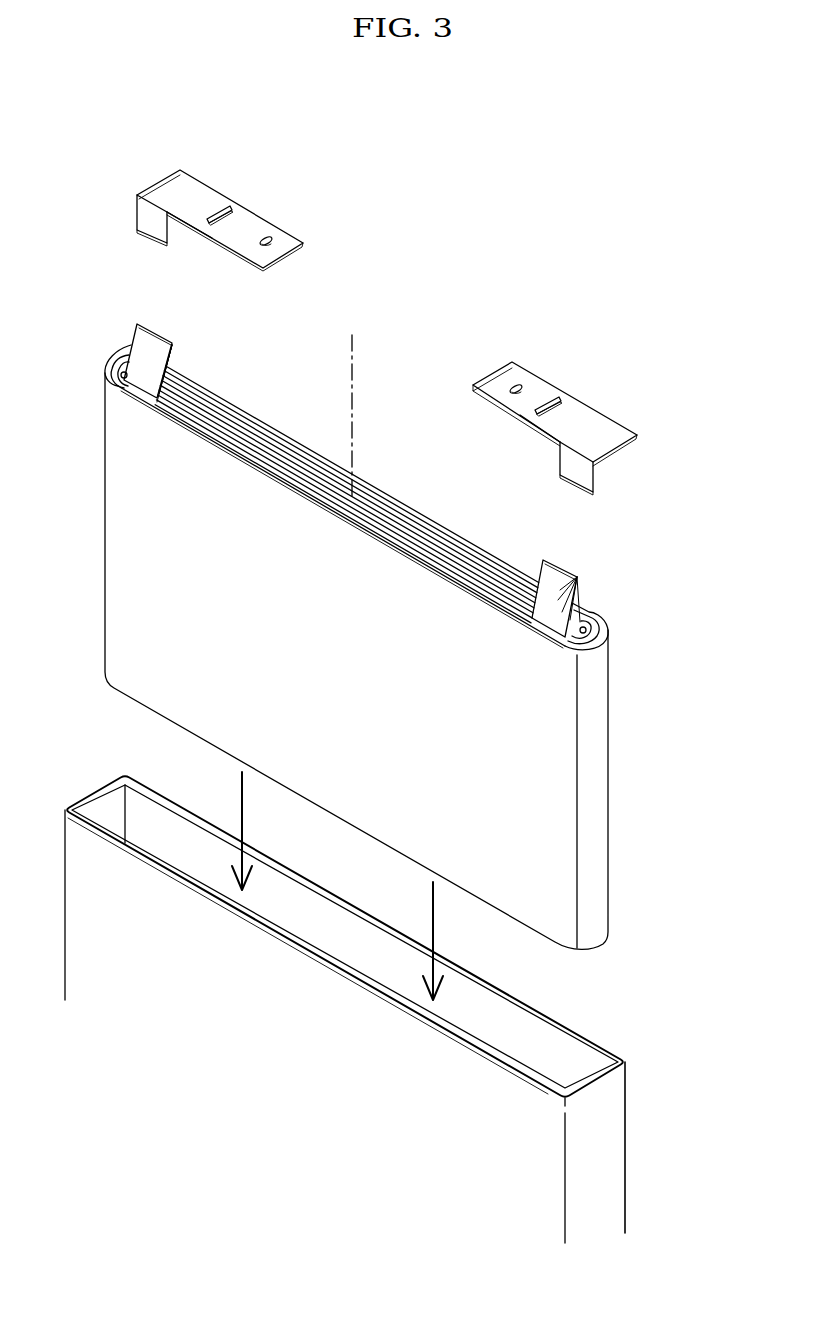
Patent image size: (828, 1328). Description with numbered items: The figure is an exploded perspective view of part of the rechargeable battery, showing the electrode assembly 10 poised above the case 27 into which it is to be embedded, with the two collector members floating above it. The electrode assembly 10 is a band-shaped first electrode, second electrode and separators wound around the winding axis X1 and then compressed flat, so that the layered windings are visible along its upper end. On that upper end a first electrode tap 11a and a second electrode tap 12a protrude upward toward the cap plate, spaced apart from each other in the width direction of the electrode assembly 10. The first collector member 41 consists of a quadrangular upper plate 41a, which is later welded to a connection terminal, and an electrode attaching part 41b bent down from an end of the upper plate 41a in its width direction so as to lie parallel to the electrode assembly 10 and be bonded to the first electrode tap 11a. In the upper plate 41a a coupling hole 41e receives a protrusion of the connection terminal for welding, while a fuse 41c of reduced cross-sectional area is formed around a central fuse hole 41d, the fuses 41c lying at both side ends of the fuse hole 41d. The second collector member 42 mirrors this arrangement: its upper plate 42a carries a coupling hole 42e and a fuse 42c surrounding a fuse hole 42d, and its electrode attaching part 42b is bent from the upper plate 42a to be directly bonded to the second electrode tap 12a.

The electrode assembly 10 is at (630, 707).
The first electrode tap 11a is at (560, 583).
The second electrode tap 12a is at (147, 346).
The case 27 is at (613, 1143).
The first collector member 41 is at (569, 402).
The upper plate 41a is at (525, 372).
The electrode attaching part 41b is at (587, 473).
The fuse 41c is at (562, 397).
The fuse hole 41d is at (533, 420).
The coupling hole 41e is at (512, 383).
The second collector member 42 is at (208, 192).
The upper plate 42a is at (253, 222).
The electrode attaching part 42b is at (140, 215).
The fuse 42c is at (237, 210).
The fuse hole 42d is at (210, 235).
The coupling hole 42e is at (273, 242).
The winding axis X1 is at (354, 385).